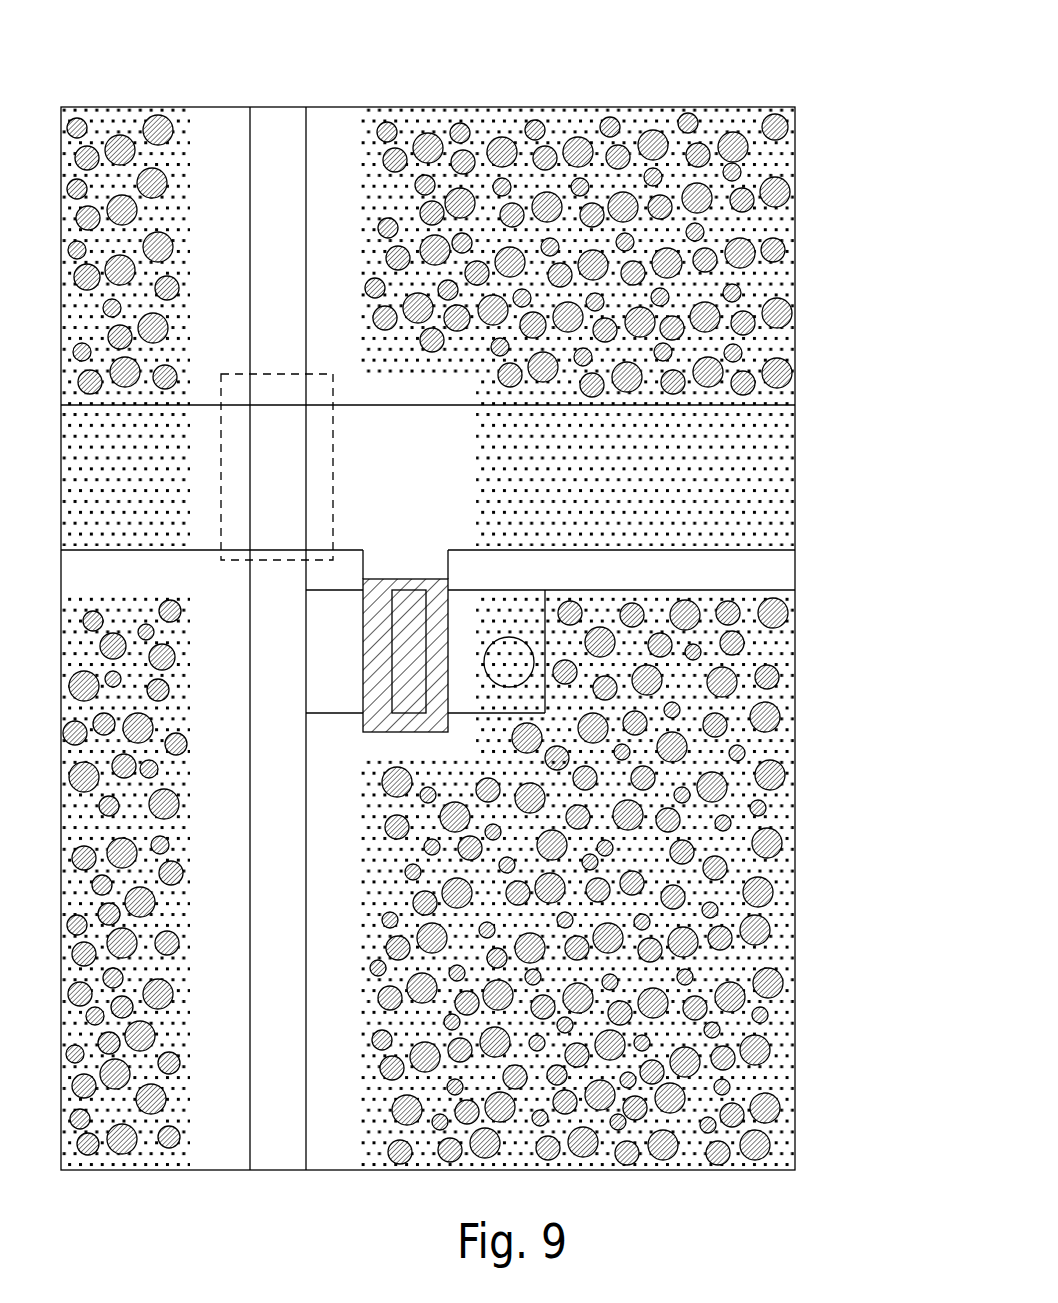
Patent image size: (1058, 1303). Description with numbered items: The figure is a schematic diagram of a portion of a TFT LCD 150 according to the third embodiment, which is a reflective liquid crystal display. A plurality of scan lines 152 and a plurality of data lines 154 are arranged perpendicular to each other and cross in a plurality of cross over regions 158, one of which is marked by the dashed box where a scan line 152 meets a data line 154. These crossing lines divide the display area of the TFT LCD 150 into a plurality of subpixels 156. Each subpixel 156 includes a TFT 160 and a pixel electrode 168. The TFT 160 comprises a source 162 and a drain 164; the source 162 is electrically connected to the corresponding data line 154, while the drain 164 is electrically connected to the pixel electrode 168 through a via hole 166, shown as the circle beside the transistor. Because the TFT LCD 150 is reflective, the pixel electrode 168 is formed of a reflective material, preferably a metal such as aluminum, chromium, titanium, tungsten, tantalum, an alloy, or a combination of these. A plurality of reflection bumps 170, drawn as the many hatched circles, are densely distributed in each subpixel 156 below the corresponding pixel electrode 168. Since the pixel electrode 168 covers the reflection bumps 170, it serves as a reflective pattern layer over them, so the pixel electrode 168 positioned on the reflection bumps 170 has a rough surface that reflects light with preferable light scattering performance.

The TFT LCD 150 is at (762, 85).
The scan line 152 is at (352, 433).
The data line 154 is at (286, 198).
The subpixel 156 is at (795, 930).
The cross over region 158 is at (222, 343).
The TFT 160 is at (349, 648).
The source 162 is at (378, 607).
The drain 164 is at (437, 590).
The via hole 166 is at (523, 640).
The pixel electrode 168 is at (678, 573).
The reflection bump 170 is at (783, 700).